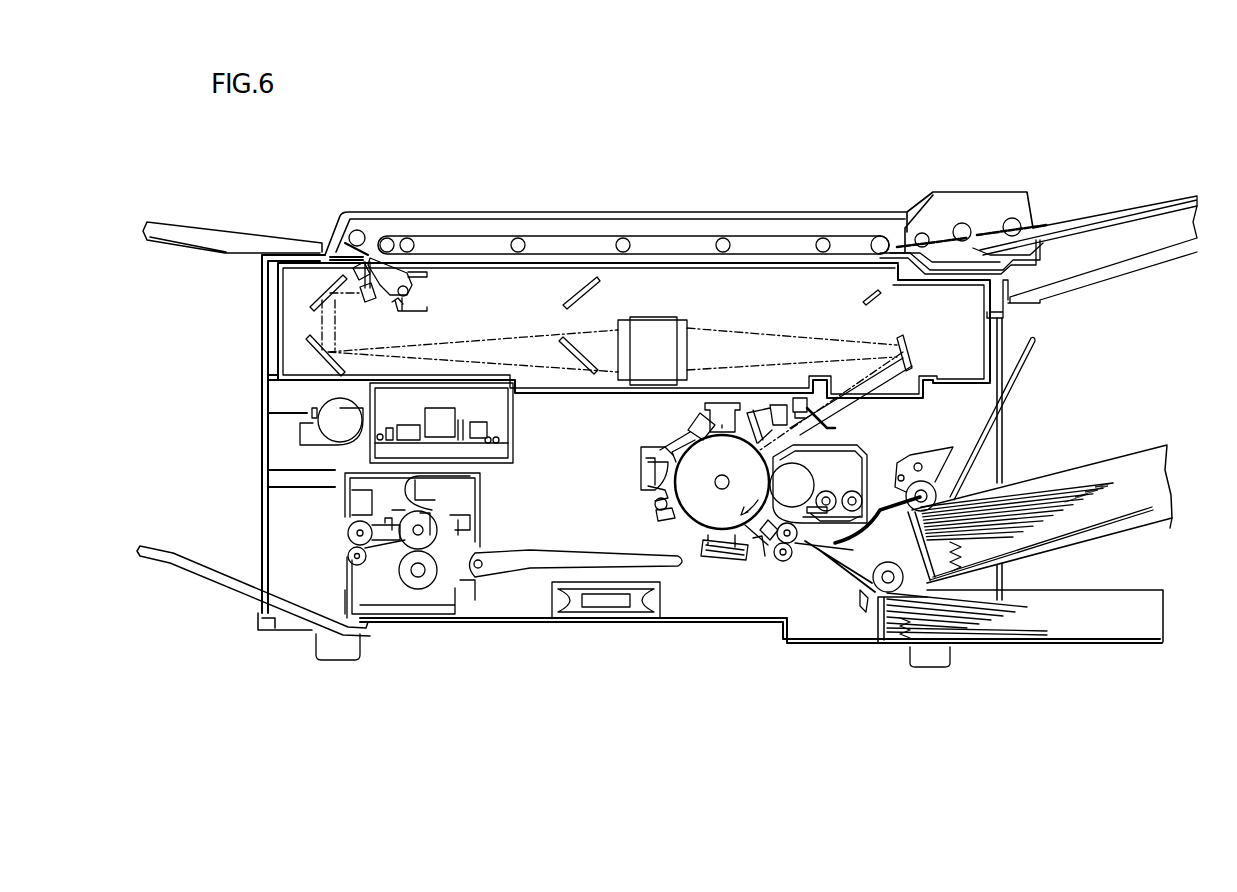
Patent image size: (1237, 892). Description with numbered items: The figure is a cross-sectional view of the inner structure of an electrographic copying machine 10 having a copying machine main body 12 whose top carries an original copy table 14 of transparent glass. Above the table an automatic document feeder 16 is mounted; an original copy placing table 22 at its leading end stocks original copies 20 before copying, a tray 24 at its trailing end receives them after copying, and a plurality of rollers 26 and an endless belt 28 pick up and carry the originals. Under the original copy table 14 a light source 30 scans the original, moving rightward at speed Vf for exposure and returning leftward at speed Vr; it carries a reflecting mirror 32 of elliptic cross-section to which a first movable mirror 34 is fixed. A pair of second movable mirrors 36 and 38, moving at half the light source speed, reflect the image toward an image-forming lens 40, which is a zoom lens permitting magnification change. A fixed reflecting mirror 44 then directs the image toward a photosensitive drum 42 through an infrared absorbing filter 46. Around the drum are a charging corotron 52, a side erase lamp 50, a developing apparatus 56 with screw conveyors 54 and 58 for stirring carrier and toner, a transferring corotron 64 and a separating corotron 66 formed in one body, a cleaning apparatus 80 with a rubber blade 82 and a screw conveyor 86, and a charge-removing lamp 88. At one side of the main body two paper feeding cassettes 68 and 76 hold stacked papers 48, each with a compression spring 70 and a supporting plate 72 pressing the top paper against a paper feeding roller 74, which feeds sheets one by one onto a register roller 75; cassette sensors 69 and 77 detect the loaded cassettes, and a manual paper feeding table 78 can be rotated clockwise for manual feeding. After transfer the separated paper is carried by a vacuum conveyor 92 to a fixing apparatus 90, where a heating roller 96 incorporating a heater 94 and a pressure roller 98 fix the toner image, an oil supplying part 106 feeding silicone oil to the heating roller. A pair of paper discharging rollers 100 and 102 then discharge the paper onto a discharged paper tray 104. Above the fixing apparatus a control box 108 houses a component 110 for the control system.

The electrographic copying machine 10 is at (490, 197).
The copying machine main body 12 is at (1004, 442).
The original copy table 14 is at (695, 256).
The automatic document feeder 16 is at (630, 232).
The original copies 20 is at (1120, 212).
The original copy placing table 22 is at (1163, 245).
The tray 24 is at (241, 243).
The rollers 26 is at (360, 231).
The endless belt 28 is at (828, 235).
The light source 30 is at (412, 287).
The reflecting mirror 32 is at (394, 306).
The first movable mirror 34 is at (364, 303).
The movable mirror 36 is at (319, 297).
The movable mirror 38 is at (318, 352).
The image-forming lens 40 is at (665, 323).
The photosensitive drum 42 is at (694, 520).
The fixed reflecting mirror 44 is at (913, 354).
The infrared absorbing filter 46 is at (837, 417).
The papers 48 is at (1087, 480).
The side erase lamp 50 is at (762, 425).
The charging corotron 52 is at (723, 414).
The screw conveyor 54 is at (813, 535).
The developing apparatus 56 is at (858, 475).
The screw conveyor 58 is at (862, 493).
The transferring corotron 64 is at (750, 560).
The separating corotron 66 is at (716, 556).
The paper feeding cassette 68 is at (1110, 645).
The cassette sensor 69 is at (863, 612).
The compression spring 70 is at (964, 563).
The supporting plate 72 is at (1126, 520).
The paper feeding roller 74 is at (927, 484).
The register roller 75 is at (786, 565).
The paper feeding cassette 76 is at (1171, 520).
The cassette sensor 77 is at (877, 529).
The manual paper feeding table 78 is at (1030, 353).
The cleaning apparatus 80 is at (641, 469).
The rubber blade 82 is at (662, 488).
The screw conveyor 86 is at (655, 511).
The charge-removing lamp 88 is at (681, 425).
The fixing apparatus 90 is at (396, 592).
The vacuum conveyor 92 is at (537, 555).
The heater 94 is at (426, 530).
The heating roller 96 is at (405, 520).
The pressure roller 98 is at (428, 586).
The paper discharging roller 100 is at (350, 534).
The paper discharging roller 102 is at (350, 560).
The discharged paper tray 104 is at (224, 583).
The oil supplying part 106 is at (440, 500).
The control box 108 is at (514, 401).
The component 110 is at (496, 431).